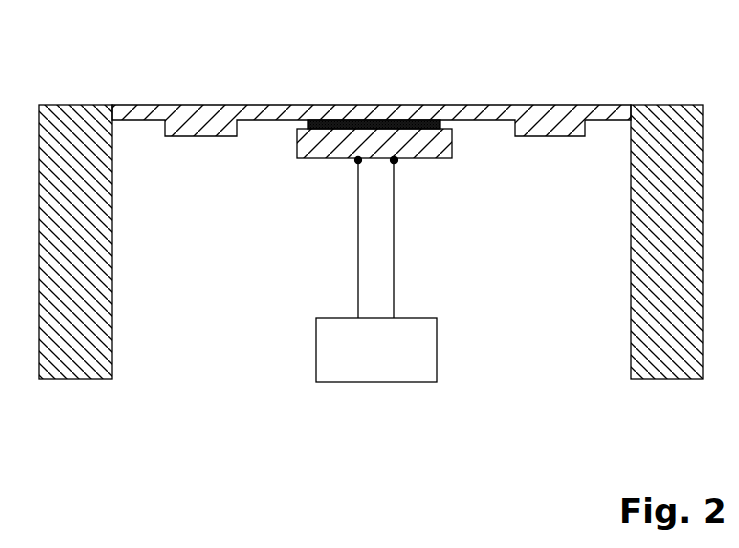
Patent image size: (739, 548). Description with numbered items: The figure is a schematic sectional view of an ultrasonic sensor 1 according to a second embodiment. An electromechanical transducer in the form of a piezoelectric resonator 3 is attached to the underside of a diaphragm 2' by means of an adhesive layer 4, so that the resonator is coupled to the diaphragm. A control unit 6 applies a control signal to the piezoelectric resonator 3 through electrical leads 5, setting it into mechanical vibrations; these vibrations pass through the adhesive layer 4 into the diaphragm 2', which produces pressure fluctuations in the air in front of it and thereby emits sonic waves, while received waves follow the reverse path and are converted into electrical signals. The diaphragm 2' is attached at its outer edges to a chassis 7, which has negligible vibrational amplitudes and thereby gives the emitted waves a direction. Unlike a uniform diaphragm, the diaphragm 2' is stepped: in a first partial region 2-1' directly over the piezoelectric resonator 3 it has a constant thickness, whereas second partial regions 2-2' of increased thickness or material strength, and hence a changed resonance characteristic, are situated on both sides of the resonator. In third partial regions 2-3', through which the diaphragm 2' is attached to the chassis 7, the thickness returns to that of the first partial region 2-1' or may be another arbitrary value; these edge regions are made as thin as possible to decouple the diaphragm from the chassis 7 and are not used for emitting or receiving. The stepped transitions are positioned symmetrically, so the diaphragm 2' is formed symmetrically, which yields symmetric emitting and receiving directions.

The ultrasonic sensor 1 is at (184, 81).
The diaphragm 2' is at (371, 85).
The first partial region 2-1' is at (376, 95).
The second partial regions 2-2' is at (375, 148).
The third partial regions 2-3' is at (370, 95).
The piezoelectric resonator 3 is at (437, 143).
The adhesive layer 4 is at (308, 124).
The electrical leads 5 is at (358, 241).
The control unit 6 is at (422, 351).
The chassis 7 is at (108, 221).